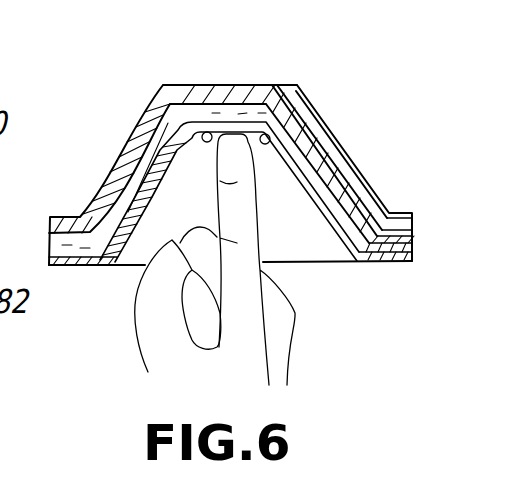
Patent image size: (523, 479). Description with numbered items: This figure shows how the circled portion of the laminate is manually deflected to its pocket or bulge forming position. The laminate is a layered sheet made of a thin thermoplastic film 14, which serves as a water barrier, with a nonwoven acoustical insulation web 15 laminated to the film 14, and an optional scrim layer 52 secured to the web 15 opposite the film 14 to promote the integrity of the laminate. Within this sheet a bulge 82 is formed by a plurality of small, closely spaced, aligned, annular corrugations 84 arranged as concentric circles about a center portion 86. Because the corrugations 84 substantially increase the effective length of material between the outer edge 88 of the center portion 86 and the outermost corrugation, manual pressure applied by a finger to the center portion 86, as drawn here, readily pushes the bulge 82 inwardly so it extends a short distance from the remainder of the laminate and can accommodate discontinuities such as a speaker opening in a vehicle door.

The bulge 82 is at (350, 154).
The corrugations 84 is at (131, 237).
The center portion 86 is at (208, 130).
The outer edge of the center portion 88 is at (302, 125).
The thermoplastic film 14 is at (414, 220).
The nonwoven acoustical insulation web 15 is at (416, 240).
The scrim layer 52 is at (402, 262).